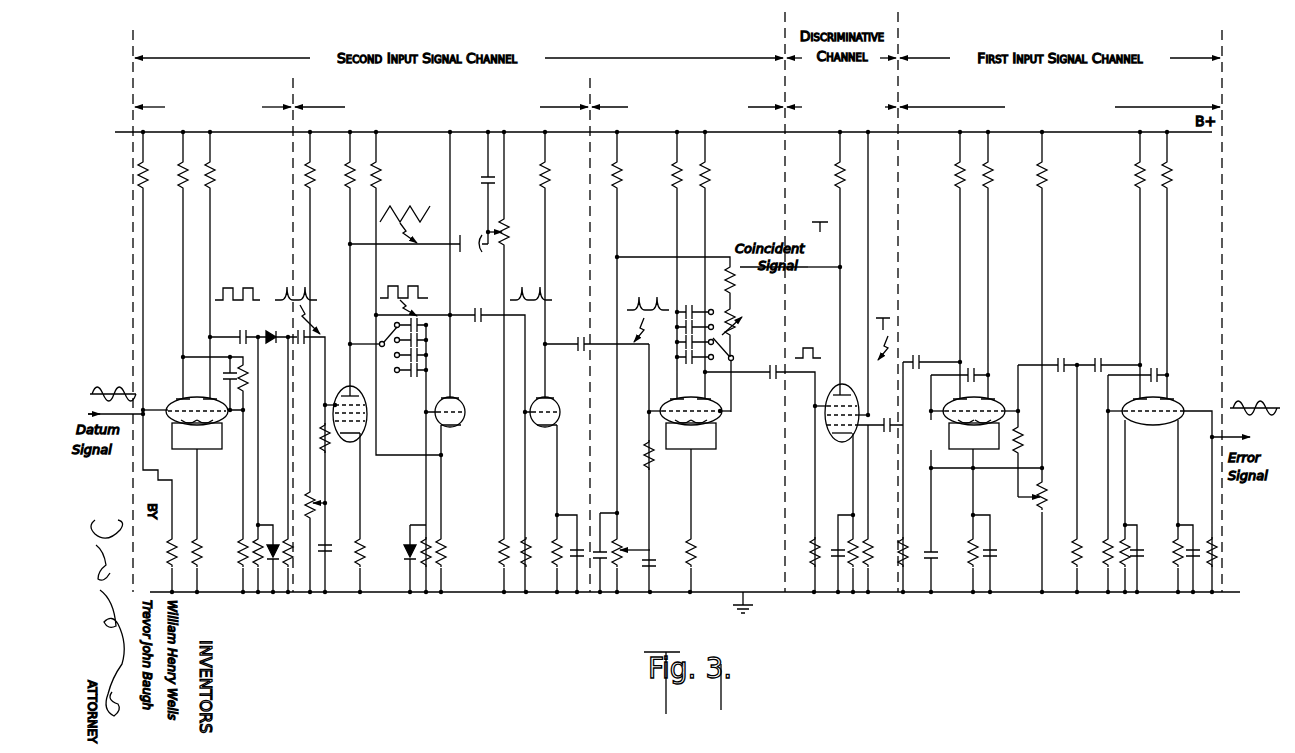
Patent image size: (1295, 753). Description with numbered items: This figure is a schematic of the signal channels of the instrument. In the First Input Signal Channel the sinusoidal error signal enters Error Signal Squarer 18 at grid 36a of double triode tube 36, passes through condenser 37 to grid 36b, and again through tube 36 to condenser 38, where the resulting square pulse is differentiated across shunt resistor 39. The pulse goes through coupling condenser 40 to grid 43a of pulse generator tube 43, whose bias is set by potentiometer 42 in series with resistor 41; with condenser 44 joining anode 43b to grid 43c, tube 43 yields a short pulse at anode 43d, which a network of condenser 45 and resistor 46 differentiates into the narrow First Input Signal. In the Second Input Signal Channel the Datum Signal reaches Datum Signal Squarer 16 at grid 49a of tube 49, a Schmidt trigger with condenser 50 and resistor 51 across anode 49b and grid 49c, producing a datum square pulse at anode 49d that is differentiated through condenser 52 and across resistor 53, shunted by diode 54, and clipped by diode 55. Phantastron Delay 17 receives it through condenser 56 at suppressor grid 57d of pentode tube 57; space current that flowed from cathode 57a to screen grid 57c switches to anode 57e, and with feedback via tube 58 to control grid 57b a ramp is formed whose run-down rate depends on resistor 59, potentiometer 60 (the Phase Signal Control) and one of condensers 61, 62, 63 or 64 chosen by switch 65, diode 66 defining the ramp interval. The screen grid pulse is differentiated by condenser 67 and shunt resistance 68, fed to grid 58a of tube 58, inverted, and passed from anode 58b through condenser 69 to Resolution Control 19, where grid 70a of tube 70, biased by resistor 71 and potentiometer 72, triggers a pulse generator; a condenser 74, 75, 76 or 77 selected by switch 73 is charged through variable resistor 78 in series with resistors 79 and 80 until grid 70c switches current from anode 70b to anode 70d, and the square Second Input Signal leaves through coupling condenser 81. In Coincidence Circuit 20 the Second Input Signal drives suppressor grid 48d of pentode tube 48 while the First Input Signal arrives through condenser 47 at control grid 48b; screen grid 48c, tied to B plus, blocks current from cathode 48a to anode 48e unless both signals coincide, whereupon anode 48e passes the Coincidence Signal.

The Datum Signal Squarer 16 is at (213, 105).
The Phantastron Delay 17 is at (441, 107).
The Error Signal Squarer 18 is at (1060, 105).
The Resolution Control 19 is at (687, 105).
The Coincidence Circuit 20 is at (841, 100).
The tube 36 is at (1166, 396).
The grid 36a is at (1180, 408).
The grid 36b is at (1114, 409).
The condenser 37 is at (1158, 368).
The condenser 38 is at (1097, 355).
The shunt resistor 39 is at (1080, 545).
The coupling condenser 40 is at (1061, 356).
The resistor 41 is at (1022, 444).
The potentiometer 42 is at (1044, 504).
The pulse generator tube 43 is at (973, 395).
The grid 43a is at (988, 416).
The anode 43b is at (1002, 395).
The grid 43c is at (976, 420).
The anode 43d is at (948, 395).
The condenser 44 is at (976, 370).
The condenser 45 is at (912, 357).
The resistor 46 is at (907, 547).
The condenser 47 is at (888, 434).
The tube 48 is at (852, 389).
The cathode 48a is at (834, 435).
The control grid 48b is at (830, 426).
The screen grid 48c is at (828, 416).
The suppressor grid 48d is at (826, 405).
The anode 48e is at (832, 391).
The tube 49 is at (204, 398).
The grid 49a is at (178, 426).
The anode 49b is at (171, 405).
The grid 49c is at (215, 426).
The anode 49d is at (197, 436).
The condenser 50 is at (228, 372).
The resistor 51 is at (248, 382).
The condenser 52 is at (240, 331).
The resistor 53 is at (268, 525).
The diode 54 is at (272, 564).
The diode 55 is at (267, 331).
The condenser 56 is at (300, 340).
The tube 57 is at (358, 391).
The cathode 57a is at (360, 433).
The control grid 57b is at (365, 421).
The screen grid 57c is at (365, 413).
The suppressor grid 57d is at (365, 405).
The anode 57e is at (365, 396).
The tube 58 is at (456, 398).
The grid 58a is at (560, 422).
The anode 58b is at (556, 397).
The resistor 59 is at (500, 548).
The potentiometer 60 is at (507, 231).
The condenser 61 is at (422, 325).
The condenser 62 is at (422, 340).
The condenser 63 is at (422, 355).
The condenser 64 is at (422, 371).
The switch 65 is at (379, 339).
The diode 66 is at (476, 234).
The condenser 67 is at (478, 310).
The shunt resistance 68 is at (530, 544).
The condenser 69 is at (578, 340).
The tube 70 is at (686, 398).
The grid 70a is at (696, 420).
The anode 70b is at (659, 406).
The grid 70c is at (714, 416).
The anode 70d is at (711, 398).
The resistor 71 is at (660, 468).
The potentiometer 72 is at (622, 544).
The switch 73 is at (736, 356).
The condenser 74 is at (687, 310).
The condenser 75 is at (680, 327).
The condenser 76 is at (680, 344).
The condenser 77 is at (682, 359).
The variable resistor 78 is at (742, 322).
The resistor 79 is at (734, 285).
The resistor 80 is at (622, 176).
The coupling condenser 81 is at (772, 378).